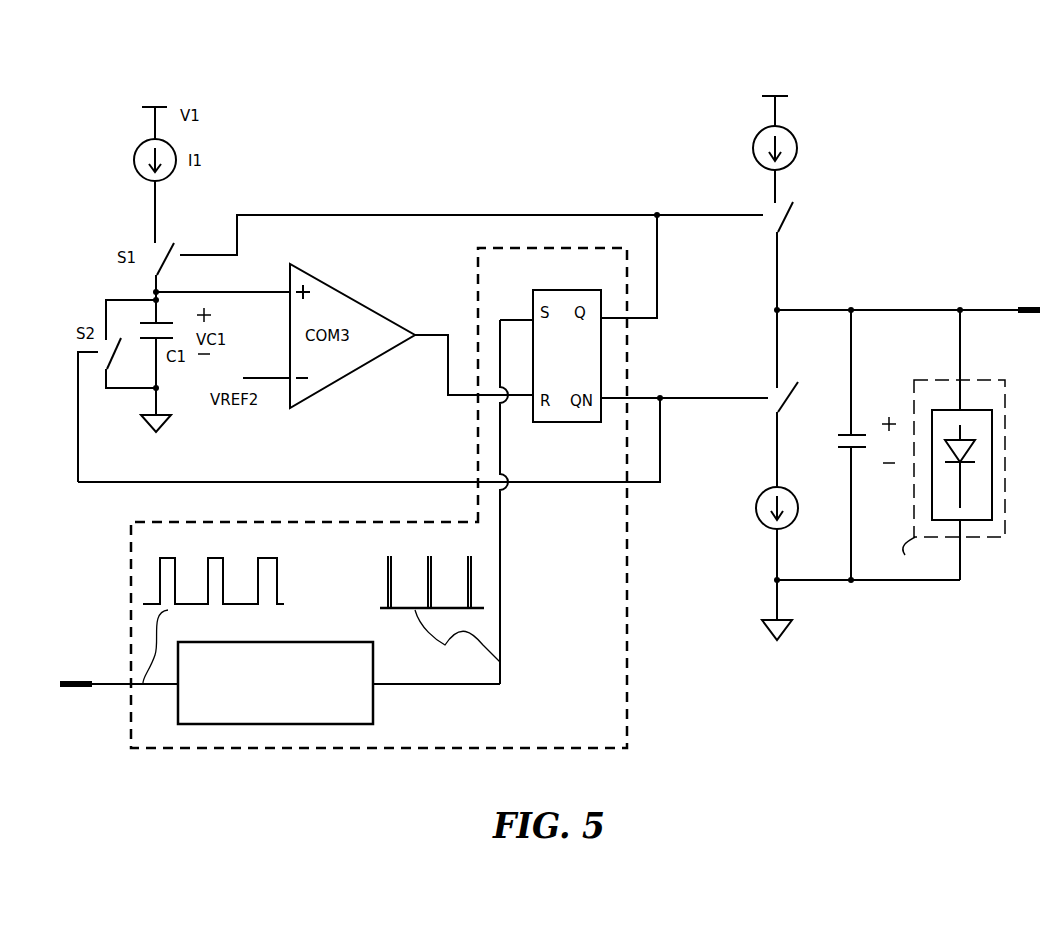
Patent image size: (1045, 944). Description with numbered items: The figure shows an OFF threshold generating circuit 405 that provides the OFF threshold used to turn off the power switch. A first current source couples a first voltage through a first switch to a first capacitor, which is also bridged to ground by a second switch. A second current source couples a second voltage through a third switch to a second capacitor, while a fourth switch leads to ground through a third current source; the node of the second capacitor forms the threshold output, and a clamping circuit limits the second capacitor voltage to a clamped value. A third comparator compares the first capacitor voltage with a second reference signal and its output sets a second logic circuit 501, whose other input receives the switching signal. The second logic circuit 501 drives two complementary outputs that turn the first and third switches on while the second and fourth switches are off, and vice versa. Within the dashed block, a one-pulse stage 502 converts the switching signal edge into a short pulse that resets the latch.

The OFF threshold generating circuit 405 is at (898, 195).
The second logic circuit 501 is at (362, 498).
The one pulse generator 502 is at (310, 642).